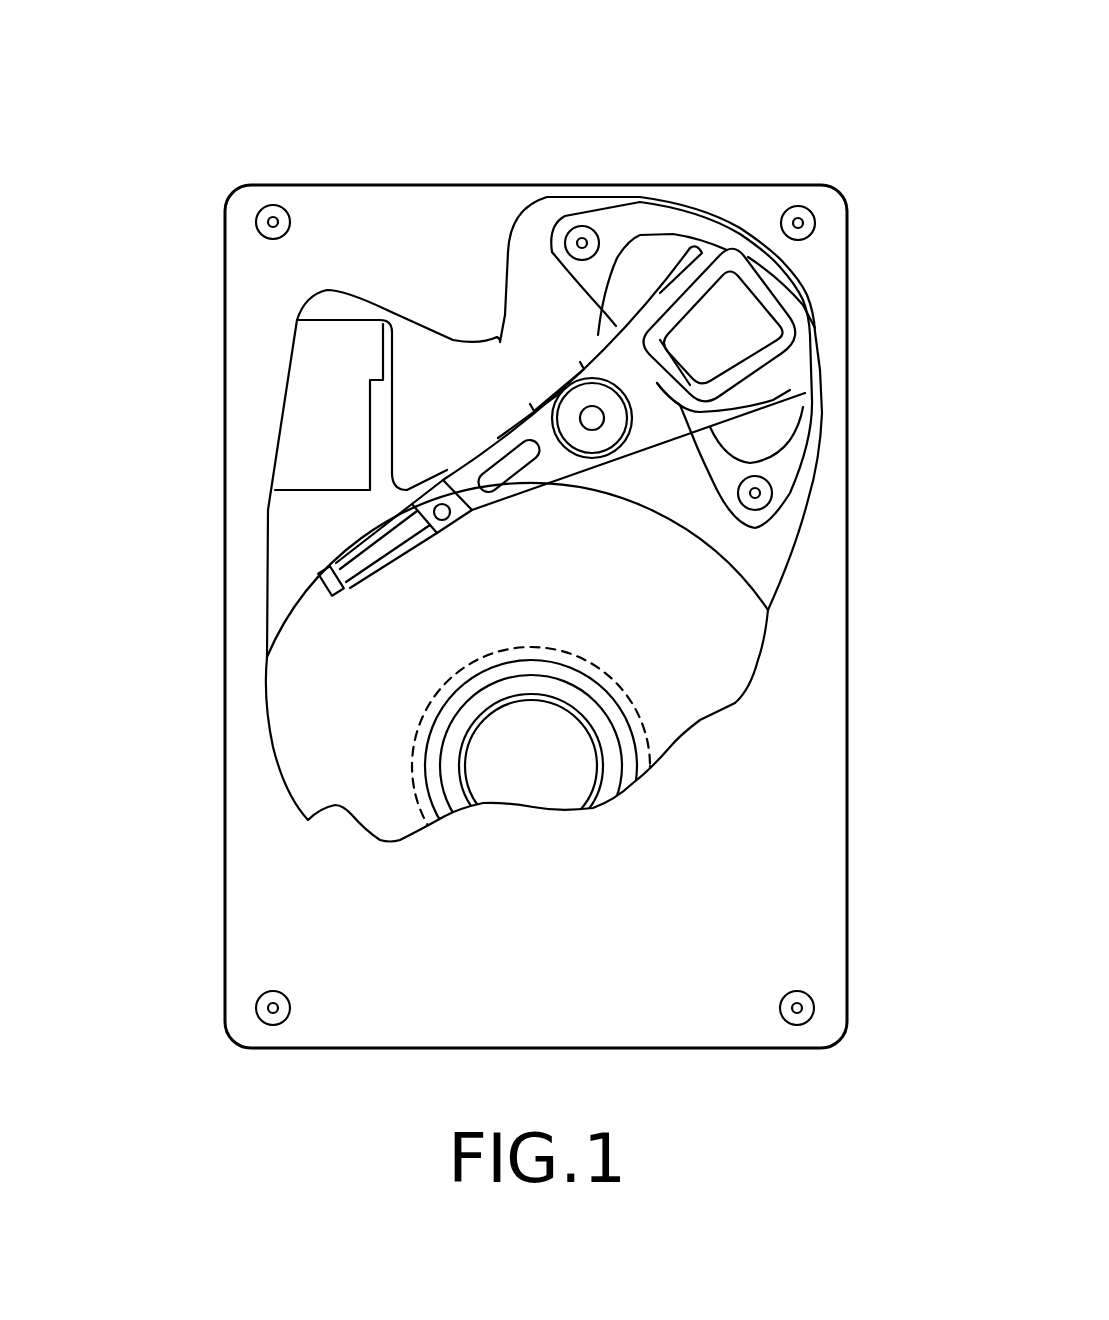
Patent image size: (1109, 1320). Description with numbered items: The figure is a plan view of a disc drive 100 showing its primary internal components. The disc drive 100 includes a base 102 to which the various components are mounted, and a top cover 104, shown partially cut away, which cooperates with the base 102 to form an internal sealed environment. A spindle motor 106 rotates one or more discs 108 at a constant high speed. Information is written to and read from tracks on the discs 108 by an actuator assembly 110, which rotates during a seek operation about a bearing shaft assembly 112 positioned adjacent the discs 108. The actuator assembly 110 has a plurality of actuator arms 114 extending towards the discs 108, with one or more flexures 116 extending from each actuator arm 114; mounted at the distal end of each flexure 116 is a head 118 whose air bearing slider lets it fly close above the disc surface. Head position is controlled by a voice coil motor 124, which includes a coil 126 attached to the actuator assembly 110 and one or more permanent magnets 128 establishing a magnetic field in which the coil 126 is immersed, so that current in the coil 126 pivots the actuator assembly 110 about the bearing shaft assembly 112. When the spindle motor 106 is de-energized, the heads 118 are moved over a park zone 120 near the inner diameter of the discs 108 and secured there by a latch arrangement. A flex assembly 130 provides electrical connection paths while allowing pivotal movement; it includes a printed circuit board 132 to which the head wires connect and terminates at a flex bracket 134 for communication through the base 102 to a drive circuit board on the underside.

The disc drive 100 is at (268, 134).
The base 102 is at (293, 548).
The top cover 104 is at (277, 875).
The spindle motor 106 is at (532, 777).
The discs 108 is at (710, 680).
The actuator assembly 110 is at (571, 501).
The bearing shaft assembly 112 is at (607, 434).
The actuator arms 114 is at (521, 487).
The flexures 116 is at (380, 552).
The head 118 is at (322, 592).
The park zone 120 is at (410, 763).
The voice coil motor 124 is at (626, 196).
The coil 126 is at (792, 325).
The permanent magnets 128 is at (628, 275).
The flex assembly 130 is at (501, 425).
The printed circuit board 132 is at (548, 382).
The flex bracket 134 is at (317, 420).